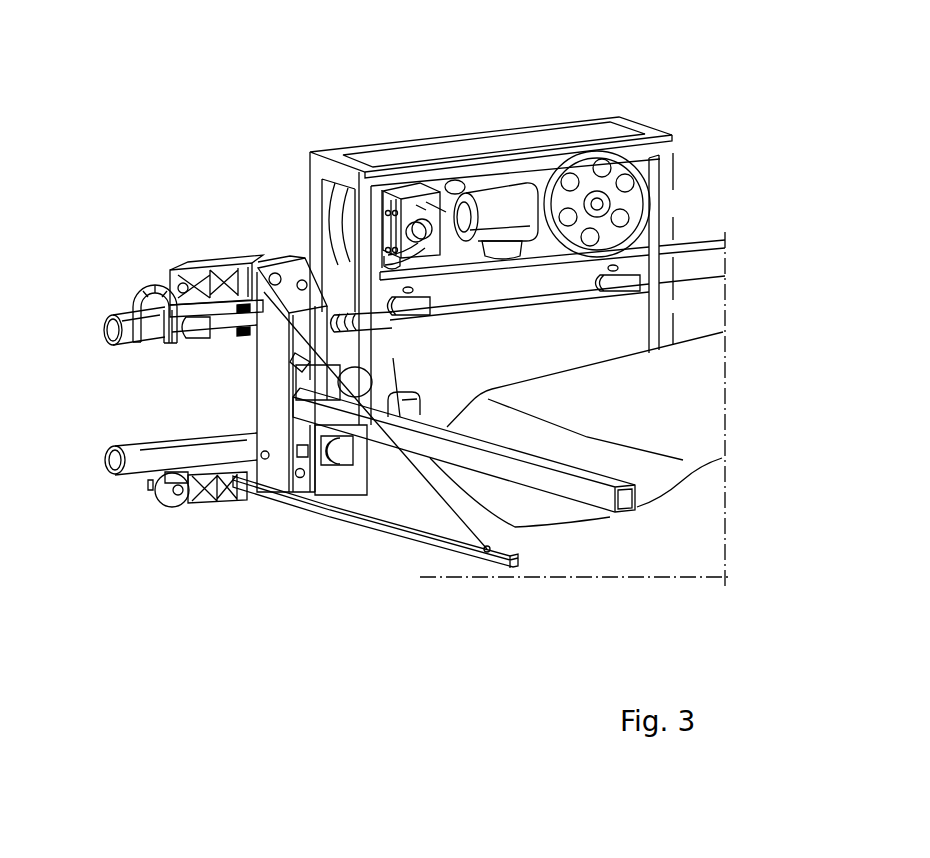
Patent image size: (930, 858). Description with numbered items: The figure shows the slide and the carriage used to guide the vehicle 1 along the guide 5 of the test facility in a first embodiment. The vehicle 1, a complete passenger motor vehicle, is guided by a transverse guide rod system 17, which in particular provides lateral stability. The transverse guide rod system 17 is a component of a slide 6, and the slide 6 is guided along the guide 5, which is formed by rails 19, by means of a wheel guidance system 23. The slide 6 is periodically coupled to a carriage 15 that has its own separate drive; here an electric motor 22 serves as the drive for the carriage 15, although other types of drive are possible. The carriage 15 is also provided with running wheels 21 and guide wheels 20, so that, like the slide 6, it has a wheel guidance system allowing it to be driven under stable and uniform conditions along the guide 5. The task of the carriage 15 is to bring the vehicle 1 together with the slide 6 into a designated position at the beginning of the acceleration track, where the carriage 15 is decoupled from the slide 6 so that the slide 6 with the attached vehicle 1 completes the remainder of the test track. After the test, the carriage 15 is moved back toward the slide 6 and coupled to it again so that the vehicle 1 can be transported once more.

The vehicle 1 is at (703, 394).
The guide 5 is at (97, 441).
The slide 6 is at (200, 236).
The carriage 15 is at (415, 118).
The transverse guide rod system 17 is at (598, 498).
The rails 19 is at (140, 334).
The guide wheels 20 is at (616, 287).
The running wheels 21 is at (331, 214).
The electric motor 22 is at (494, 208).
The wheel guidance system 23 is at (152, 258).